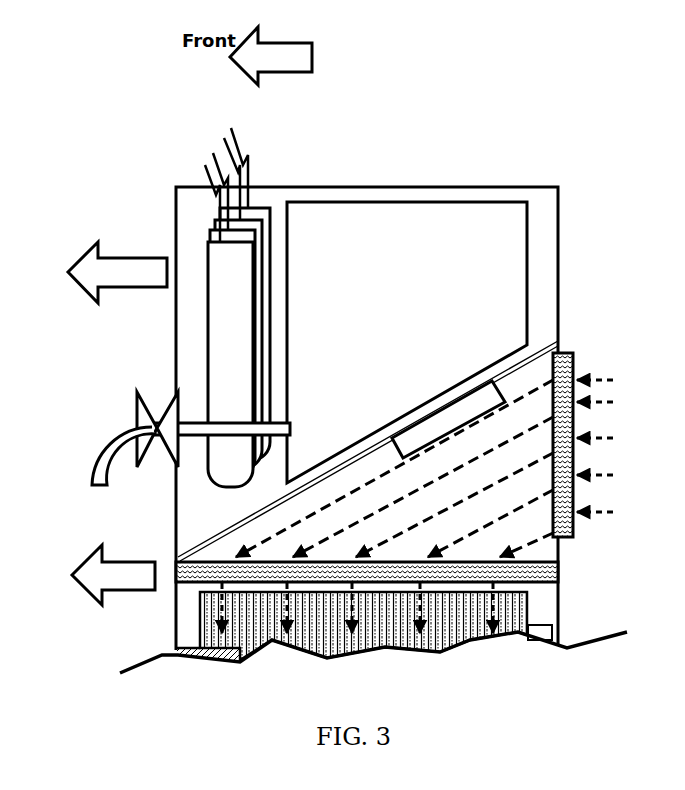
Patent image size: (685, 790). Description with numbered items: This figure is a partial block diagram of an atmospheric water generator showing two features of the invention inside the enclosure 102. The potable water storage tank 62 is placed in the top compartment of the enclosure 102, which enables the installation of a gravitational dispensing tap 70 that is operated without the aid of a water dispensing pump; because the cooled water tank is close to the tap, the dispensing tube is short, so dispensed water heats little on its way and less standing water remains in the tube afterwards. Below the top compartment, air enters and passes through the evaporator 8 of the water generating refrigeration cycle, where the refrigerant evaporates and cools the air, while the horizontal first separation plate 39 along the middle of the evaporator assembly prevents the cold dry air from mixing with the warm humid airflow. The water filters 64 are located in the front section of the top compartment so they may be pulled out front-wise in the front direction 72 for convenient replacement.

The evaporator 8 is at (523, 609).
The first separation plate 39 is at (182, 588).
The potable water storage tank 62 is at (510, 265).
The water filters 64 is at (236, 293).
The gravitational dispensing tap 70 is at (155, 427).
The front direction 72 is at (84, 262).
The enclosure 102 is at (558, 207).